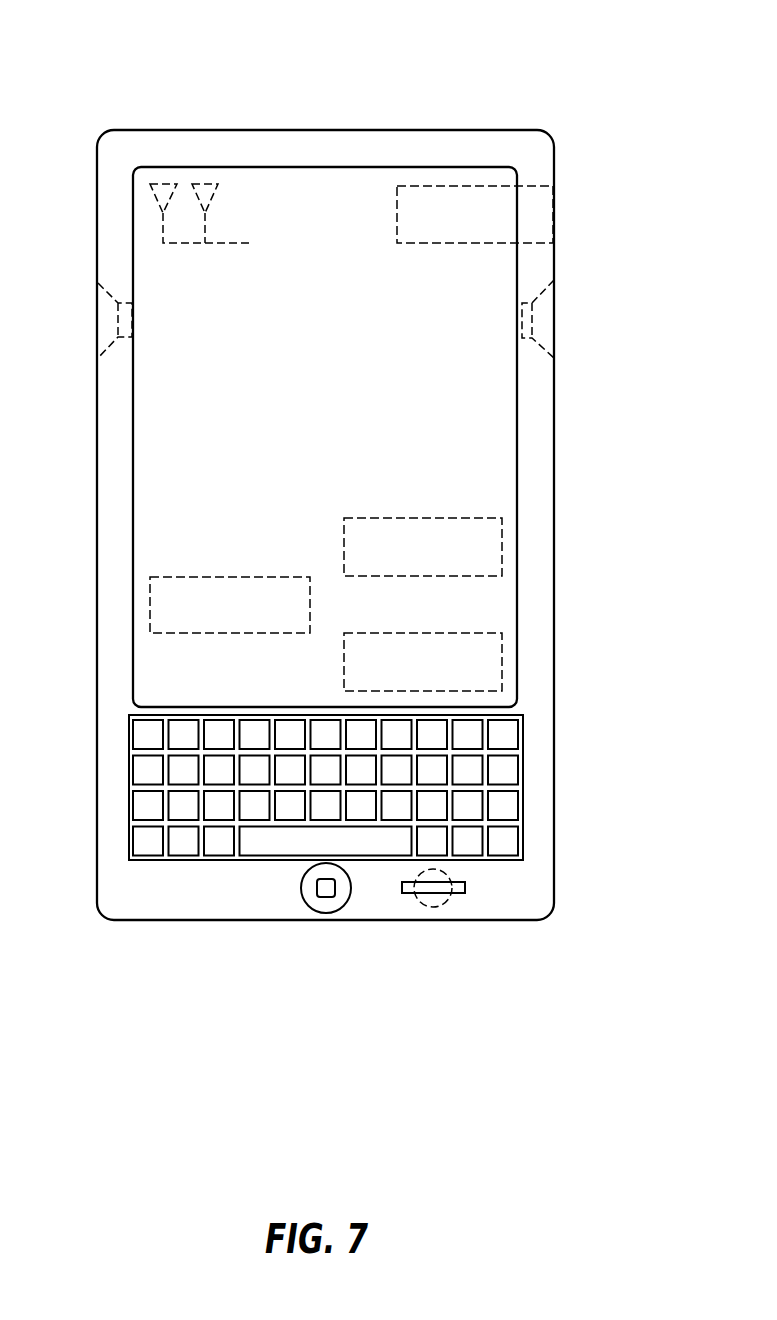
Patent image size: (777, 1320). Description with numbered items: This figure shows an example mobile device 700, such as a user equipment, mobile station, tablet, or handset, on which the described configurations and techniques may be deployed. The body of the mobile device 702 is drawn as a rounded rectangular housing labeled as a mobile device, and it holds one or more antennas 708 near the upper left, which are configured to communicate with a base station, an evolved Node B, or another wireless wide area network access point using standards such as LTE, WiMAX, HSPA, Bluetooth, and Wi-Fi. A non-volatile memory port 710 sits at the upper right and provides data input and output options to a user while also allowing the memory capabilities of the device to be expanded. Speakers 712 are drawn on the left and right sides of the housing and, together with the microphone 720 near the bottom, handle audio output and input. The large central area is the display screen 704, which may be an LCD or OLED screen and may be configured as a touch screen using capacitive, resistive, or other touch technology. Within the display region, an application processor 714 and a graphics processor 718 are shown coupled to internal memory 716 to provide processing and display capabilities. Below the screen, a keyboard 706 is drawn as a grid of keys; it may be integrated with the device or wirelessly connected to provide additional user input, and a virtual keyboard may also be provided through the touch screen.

The mobile device 700 is at (541, 69).
The mobile device 702 is at (326, 129).
The display screen 704 is at (496, 427).
The keyboard 706 is at (523, 786).
The antennas 708 is at (205, 182).
The non-volatile memory port 710 is at (556, 213).
The speakers 712 is at (107, 321).
The application processor 714 is at (423, 516).
The internal memory 716 is at (423, 631).
The graphics processor 718 is at (228, 575).
The microphone 720 is at (437, 907).